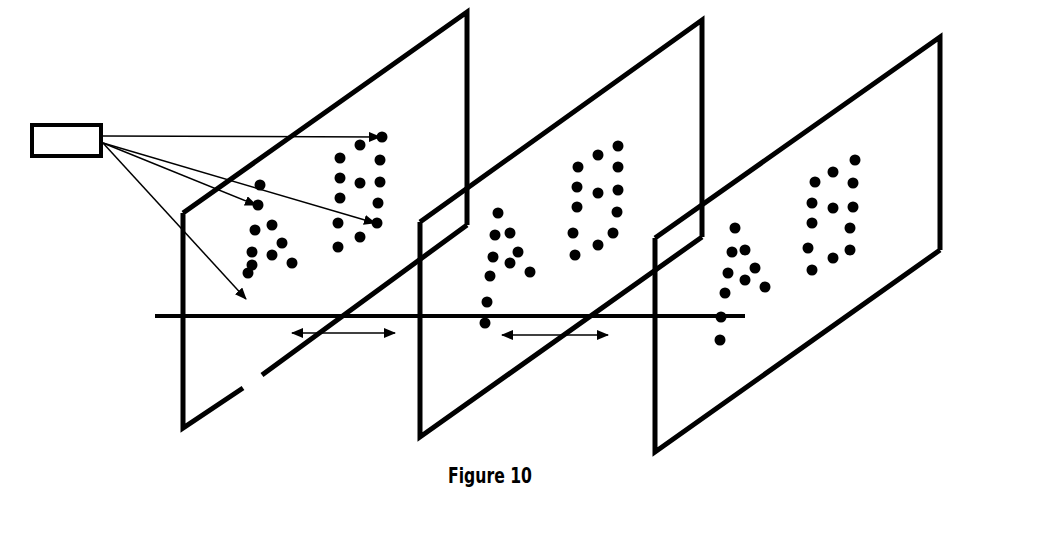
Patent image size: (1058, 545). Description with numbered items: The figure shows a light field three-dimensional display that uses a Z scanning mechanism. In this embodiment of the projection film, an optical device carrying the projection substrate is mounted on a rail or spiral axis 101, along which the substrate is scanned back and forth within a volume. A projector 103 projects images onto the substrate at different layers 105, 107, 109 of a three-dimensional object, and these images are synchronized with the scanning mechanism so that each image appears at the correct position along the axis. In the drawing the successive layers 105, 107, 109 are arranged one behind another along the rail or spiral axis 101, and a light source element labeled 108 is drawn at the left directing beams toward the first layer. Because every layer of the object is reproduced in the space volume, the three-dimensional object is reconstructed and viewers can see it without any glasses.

The rail or spiral axis 101 is at (163, 332).
The projector 103 is at (325, 220).
The layer 105 is at (268, 272).
The layer 107 is at (525, 280).
The light source 108 is at (206, 212).
The layer 109 is at (773, 270).